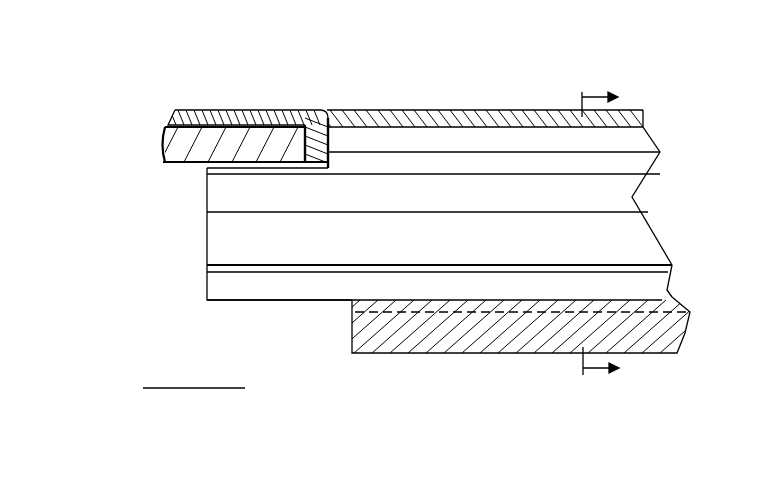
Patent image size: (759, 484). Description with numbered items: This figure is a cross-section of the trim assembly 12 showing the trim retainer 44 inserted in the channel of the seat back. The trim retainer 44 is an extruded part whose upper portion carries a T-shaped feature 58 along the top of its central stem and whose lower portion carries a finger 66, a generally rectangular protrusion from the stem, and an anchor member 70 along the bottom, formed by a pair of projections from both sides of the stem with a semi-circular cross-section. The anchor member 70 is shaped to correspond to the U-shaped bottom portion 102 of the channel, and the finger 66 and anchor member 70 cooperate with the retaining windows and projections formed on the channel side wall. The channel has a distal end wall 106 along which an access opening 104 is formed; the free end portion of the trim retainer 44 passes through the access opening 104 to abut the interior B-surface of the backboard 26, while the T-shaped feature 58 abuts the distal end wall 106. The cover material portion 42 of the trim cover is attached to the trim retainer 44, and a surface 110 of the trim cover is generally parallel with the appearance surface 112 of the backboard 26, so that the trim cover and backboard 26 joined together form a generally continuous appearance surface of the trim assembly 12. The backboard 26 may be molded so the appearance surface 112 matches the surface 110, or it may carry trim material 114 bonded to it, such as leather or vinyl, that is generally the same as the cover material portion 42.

The trim assembly 12 is at (556, 40).
The backboard 26 is at (500, 335).
The cover material portion 42 is at (540, 112).
The trim retainer 44 is at (397, 180).
The T-shaped feature 58 is at (640, 140).
The finger 66 is at (638, 233).
The anchor member 70 is at (653, 282).
The U-shaped bottom portion 102 is at (670, 335).
The access opening 104 is at (337, 310).
The distal end wall 106 is at (330, 140).
The surface 110 is at (470, 108).
The appearance surface 112 is at (212, 112).
The trim material 114 is at (288, 110).